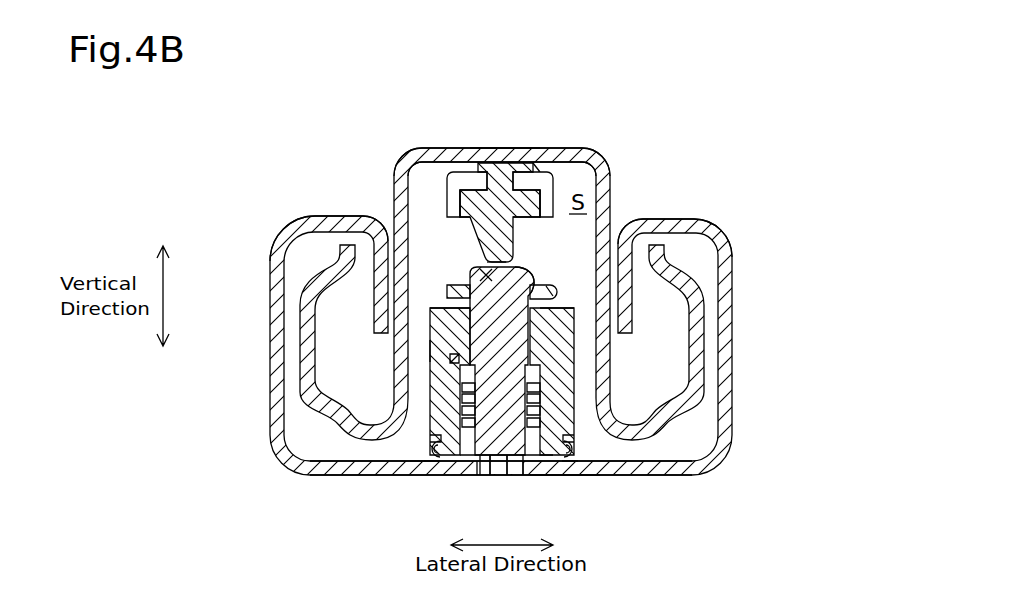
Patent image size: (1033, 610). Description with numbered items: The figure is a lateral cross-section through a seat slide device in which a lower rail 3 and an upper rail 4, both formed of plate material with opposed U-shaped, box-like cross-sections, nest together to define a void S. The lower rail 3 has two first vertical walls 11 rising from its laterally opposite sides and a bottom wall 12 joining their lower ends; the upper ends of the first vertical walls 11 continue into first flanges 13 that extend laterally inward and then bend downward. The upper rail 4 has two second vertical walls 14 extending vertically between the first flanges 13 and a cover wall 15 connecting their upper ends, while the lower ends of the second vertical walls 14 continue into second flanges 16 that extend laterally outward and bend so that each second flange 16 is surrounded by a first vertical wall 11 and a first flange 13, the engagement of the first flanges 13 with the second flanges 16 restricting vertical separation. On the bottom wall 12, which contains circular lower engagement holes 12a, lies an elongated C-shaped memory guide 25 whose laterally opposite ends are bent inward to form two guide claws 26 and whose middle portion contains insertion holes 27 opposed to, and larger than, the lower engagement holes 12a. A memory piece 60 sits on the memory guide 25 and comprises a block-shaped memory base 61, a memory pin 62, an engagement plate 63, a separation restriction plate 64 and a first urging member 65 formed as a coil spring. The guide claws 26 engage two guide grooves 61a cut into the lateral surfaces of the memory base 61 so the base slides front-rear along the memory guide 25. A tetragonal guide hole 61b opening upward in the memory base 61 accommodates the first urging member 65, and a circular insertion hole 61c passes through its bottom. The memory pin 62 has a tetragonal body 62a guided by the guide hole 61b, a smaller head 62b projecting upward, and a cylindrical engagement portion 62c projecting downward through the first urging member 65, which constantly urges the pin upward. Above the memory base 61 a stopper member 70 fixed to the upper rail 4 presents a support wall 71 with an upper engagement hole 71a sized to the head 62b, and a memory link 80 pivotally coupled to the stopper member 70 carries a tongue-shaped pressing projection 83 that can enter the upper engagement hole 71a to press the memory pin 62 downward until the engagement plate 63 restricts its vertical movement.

The lower rail 3 is at (549, 486).
The upper rail 4 is at (510, 141).
The first vertical wall 11 is at (270, 336).
The bottom wall 12 is at (623, 469).
The lower engagement hole 12a is at (478, 463).
The first flange 13 is at (338, 216).
The second vertical wall 14 is at (395, 188).
The cover wall 15 is at (536, 150).
The second flange 16 is at (305, 300).
The memory guide 25 is at (415, 468).
The guide claw 26 is at (428, 465).
The insertion hole 27 is at (512, 448).
The memory piece 60 is at (551, 279).
The memory base 61 is at (445, 378).
The guide groove 61a is at (418, 444).
The guide hole 61b is at (432, 316).
The insertion hole 61c is at (483, 457).
The memory pin 62 is at (479, 272).
The body 62a is at (440, 349).
The head 62b is at (490, 261).
The engagement portion 62c is at (500, 458).
The engagement plate 63 is at (575, 360).
The separation restriction plate 64 is at (575, 316).
The first urging member 65 is at (462, 400).
The stopper member 70 is at (586, 191).
The support wall 71 is at (577, 299).
The upper engagement hole 71a is at (523, 268).
The memory link 80 is at (555, 169).
The pressing projection 83 is at (492, 243).